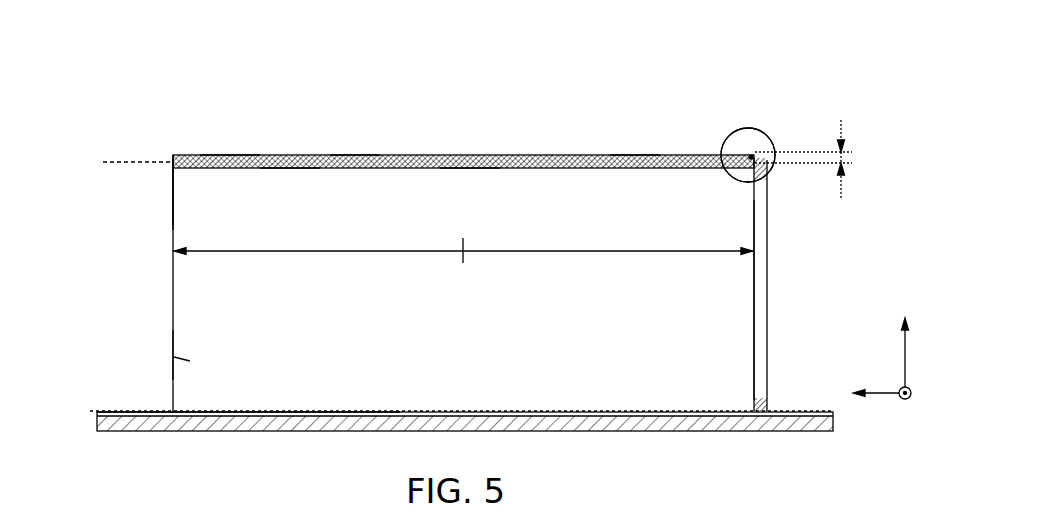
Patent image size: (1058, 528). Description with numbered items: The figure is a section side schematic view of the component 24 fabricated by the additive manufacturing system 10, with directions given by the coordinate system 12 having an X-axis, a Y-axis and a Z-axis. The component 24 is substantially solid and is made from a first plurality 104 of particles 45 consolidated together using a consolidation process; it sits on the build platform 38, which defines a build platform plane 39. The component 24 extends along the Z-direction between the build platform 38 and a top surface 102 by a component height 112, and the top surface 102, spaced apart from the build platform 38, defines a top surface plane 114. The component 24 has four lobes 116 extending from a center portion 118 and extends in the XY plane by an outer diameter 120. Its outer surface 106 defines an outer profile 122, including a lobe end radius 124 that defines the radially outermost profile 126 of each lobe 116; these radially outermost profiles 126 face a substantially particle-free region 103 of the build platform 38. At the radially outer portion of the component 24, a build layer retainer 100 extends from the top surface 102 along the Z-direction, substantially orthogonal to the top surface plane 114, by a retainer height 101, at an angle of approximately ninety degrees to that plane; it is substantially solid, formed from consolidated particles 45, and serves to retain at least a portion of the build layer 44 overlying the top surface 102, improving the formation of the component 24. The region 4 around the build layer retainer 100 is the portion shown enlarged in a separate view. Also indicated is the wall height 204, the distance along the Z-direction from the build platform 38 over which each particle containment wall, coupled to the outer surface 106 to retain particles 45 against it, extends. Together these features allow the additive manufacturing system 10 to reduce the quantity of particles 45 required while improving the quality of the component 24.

The additive manufacturing system 10 is at (820, 54).
The coordinate system 12 is at (888, 336).
The component 24 is at (558, 178).
The build platform 38 is at (805, 412).
The build platform plane 39 is at (147, 411).
The build layer 44 is at (345, 155).
The particles 45 is at (628, 155).
The build layer retainer 100 is at (749, 154).
The retainer height 101 is at (845, 158).
The top surface 102 is at (227, 155).
The substantially particle-free region 103 is at (125, 403).
The first plurality of particles 104 is at (283, 173).
The outer surface 106 is at (172, 297).
The component height 112 is at (768, 259).
The top surface plane 114 is at (112, 160).
The lobes 116 is at (172, 353).
The center portion 118 is at (465, 175).
The outer diameter 120 is at (585, 249).
The outer profile 122 is at (170, 217).
The lobe end radius 124 is at (330, 249).
The radially outermost profile 126 is at (172, 217).
The wall height 204 is at (769, 259).
The region 4 is at (770, 140).